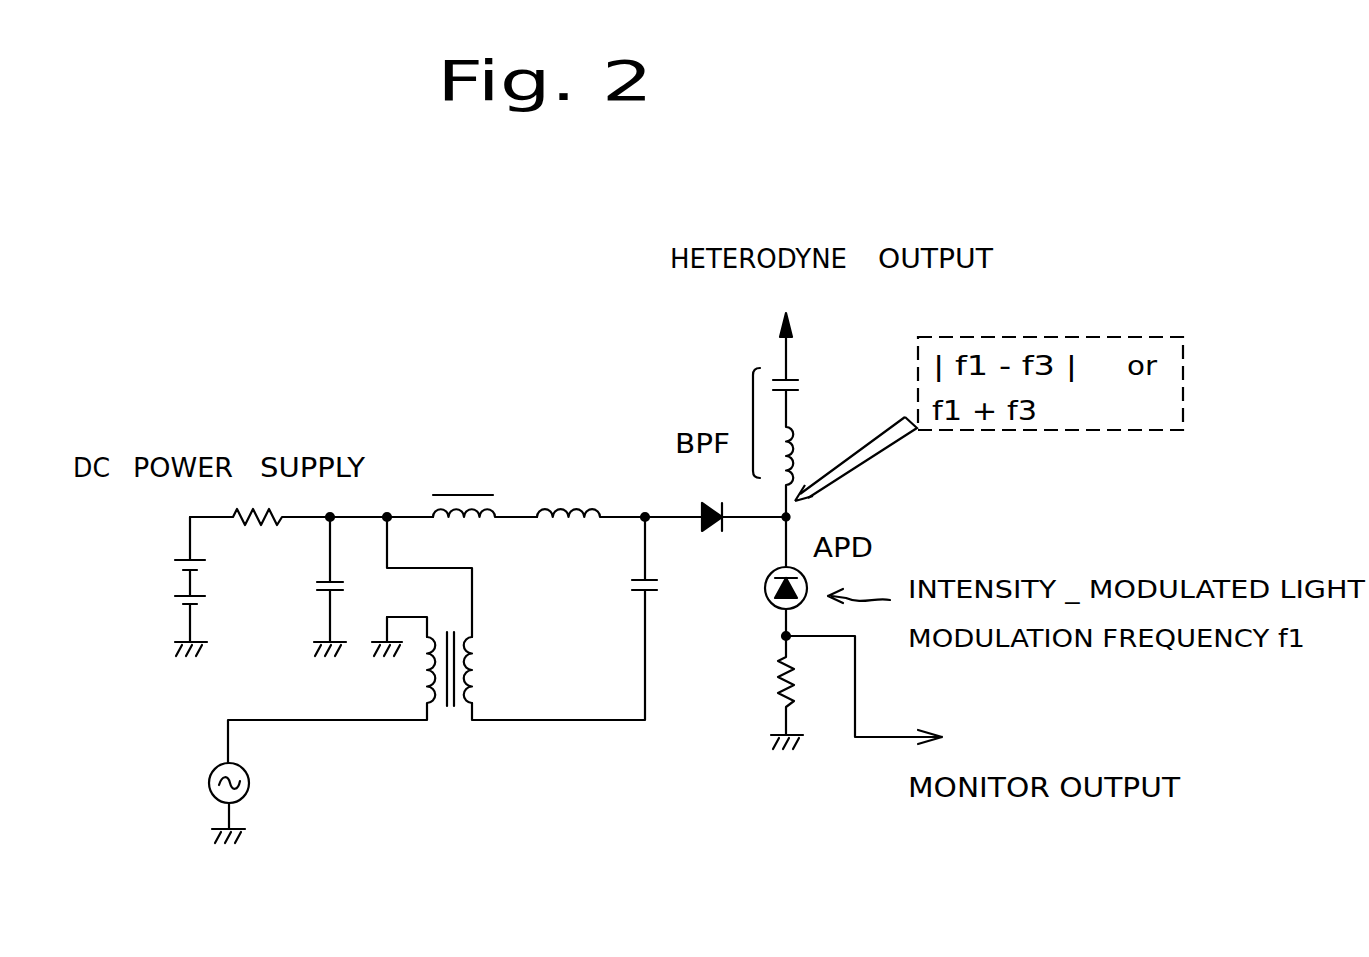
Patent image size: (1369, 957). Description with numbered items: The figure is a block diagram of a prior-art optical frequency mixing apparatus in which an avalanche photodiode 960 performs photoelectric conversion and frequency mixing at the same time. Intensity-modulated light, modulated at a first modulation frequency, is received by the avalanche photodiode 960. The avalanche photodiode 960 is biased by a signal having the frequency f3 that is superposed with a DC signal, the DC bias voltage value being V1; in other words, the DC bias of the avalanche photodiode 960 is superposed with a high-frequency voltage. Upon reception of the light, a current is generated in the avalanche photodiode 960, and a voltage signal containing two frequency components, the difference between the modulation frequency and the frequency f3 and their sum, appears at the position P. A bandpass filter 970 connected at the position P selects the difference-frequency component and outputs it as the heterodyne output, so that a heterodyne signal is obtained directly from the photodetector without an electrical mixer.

The bandpass filter 970 is at (752, 378).
The APD 960 is at (766, 594).
The bias voltage value V1 is at (178, 551).
The frequency f3 is at (199, 803).
The position P is at (805, 513).